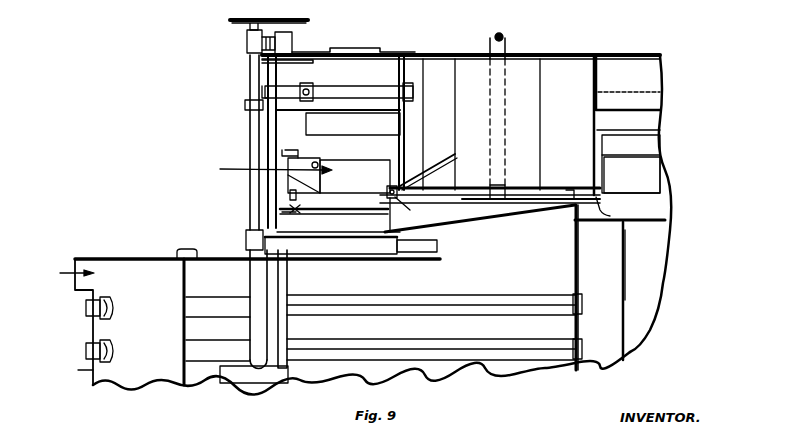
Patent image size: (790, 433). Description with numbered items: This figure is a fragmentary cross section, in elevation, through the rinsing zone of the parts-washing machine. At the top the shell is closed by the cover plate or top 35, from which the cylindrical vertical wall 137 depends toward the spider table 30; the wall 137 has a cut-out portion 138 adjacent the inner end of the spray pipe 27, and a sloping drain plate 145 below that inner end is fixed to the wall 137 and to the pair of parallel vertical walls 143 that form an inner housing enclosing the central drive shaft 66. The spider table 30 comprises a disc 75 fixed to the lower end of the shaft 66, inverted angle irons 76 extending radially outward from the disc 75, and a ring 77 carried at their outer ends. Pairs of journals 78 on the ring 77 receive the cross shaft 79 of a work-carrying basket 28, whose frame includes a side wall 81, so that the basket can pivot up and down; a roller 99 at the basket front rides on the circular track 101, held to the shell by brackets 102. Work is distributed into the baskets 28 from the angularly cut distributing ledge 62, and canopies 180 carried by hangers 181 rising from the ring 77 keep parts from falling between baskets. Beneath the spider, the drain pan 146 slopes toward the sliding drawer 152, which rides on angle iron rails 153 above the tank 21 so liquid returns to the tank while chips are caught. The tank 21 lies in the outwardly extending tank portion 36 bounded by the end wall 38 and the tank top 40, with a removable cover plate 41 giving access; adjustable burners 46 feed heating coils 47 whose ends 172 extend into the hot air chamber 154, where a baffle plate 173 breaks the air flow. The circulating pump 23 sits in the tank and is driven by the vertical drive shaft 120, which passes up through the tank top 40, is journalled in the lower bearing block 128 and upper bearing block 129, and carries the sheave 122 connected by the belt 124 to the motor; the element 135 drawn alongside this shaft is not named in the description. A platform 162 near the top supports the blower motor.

The tank 21 is at (555, 268).
The circulating pump 23 is at (240, 375).
The spray pipe 27 is at (365, 96).
The work-carrying basket 28 is at (263, 167).
The spider table 30 is at (437, 203).
The top 35 is at (568, 54).
The tank portion 36 is at (65, 322).
The end wall 38 is at (74, 370).
The tank top 40 is at (232, 262).
The removable cover plate 41 is at (143, 258).
The adjustable burner 46 is at (115, 340).
The heating coil 47 is at (440, 320).
The distributing ledge 62 is at (332, 168).
The drive shaft 66 is at (503, 36).
The disc 75 is at (520, 200).
The inverted angle iron 76 is at (566, 190).
The ring 77 is at (396, 197).
The journal 78 is at (385, 200).
The cross shaft 79 is at (386, 191).
The side wall 81 is at (632, 175).
The roller 99 is at (290, 195).
The circular track 101 is at (298, 208).
The bracket 102 is at (288, 215).
The vertical drive shaft 120 is at (250, 138).
The sheave 122 is at (240, 23).
The belt 124 is at (300, 22).
The lower bearing block 128 is at (246, 243).
The upper bearing block 129 is at (250, 42).
The pipe 135 is at (248, 117).
The cylindrical vertical wall 137 is at (603, 72).
The cut-out portion 138 is at (404, 137).
The parallel vertical wall 143 is at (516, 100).
The drain plate 145 is at (440, 168).
The drain pan 146 is at (484, 222).
The sliding drawer 152 is at (361, 248).
The angle iron rail 153 is at (428, 247).
The hot air chamber 154 is at (650, 255).
The platform 162 is at (352, 50).
The heating coil end 172 is at (582, 344).
The baffle plate 173 is at (625, 307).
The canopy 180 is at (338, 122).
The hanger 181 is at (598, 146).